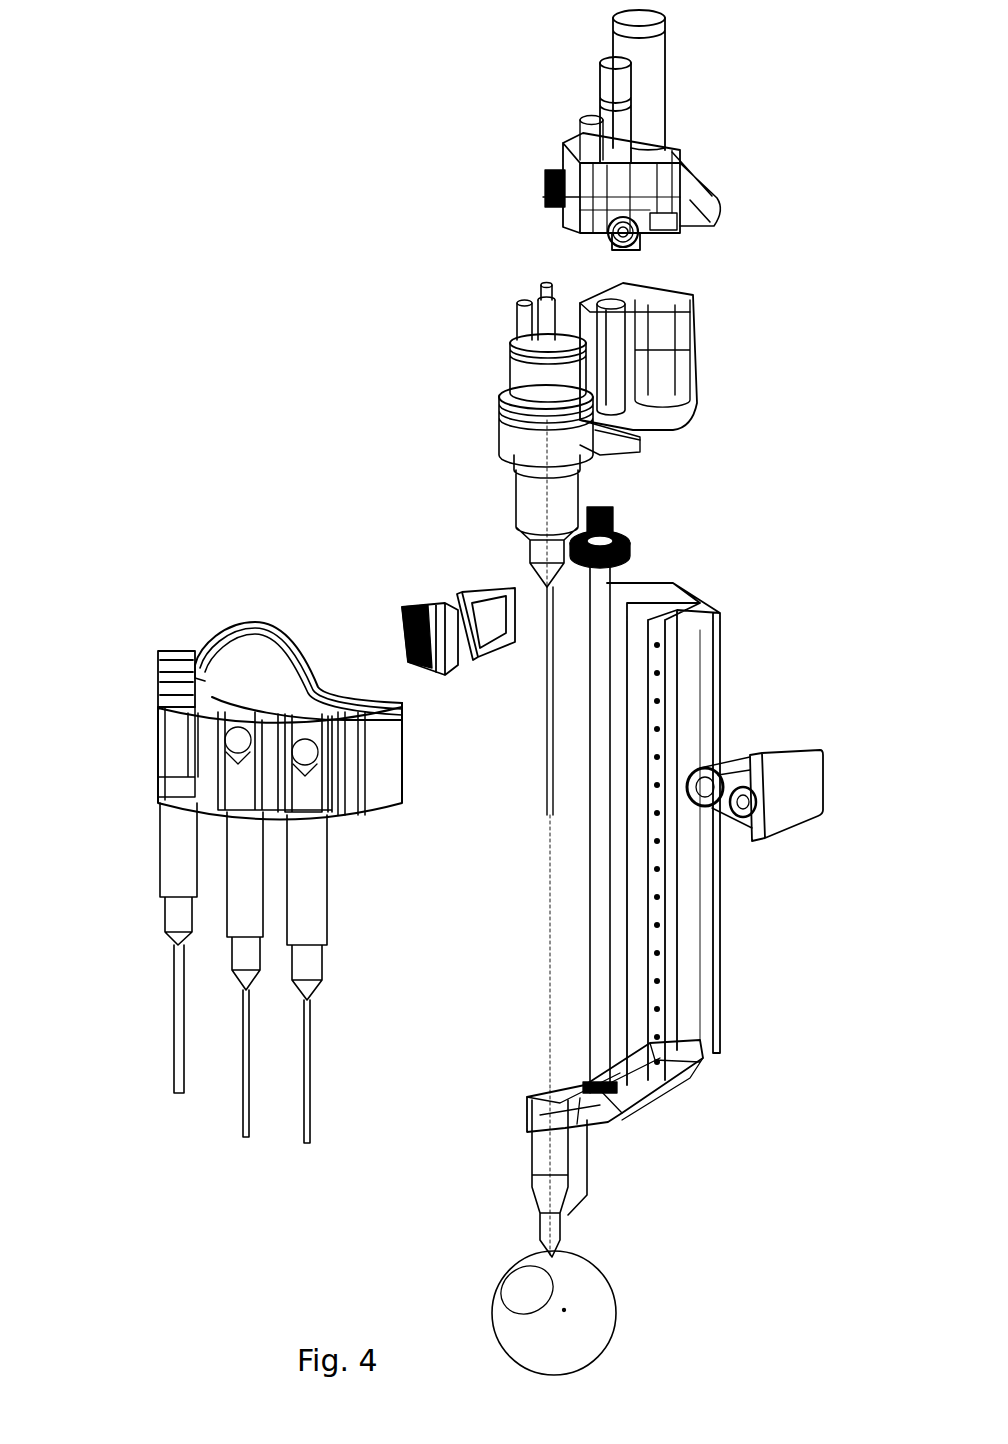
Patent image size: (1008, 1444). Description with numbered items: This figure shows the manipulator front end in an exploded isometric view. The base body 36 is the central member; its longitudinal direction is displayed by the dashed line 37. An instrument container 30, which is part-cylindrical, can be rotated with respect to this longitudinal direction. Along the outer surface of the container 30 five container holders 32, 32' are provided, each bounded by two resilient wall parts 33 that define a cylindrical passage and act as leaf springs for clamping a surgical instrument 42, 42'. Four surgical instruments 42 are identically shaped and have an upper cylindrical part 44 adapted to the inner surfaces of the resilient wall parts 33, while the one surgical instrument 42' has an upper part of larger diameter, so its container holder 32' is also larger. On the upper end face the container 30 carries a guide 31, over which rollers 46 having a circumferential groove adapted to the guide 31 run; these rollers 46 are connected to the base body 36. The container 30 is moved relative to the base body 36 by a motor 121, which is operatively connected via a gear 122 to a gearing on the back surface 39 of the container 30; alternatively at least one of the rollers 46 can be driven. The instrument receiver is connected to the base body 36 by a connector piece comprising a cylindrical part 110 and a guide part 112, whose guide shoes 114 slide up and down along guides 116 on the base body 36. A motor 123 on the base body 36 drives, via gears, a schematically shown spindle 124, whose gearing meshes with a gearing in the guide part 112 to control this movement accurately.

The instrument container 30 is at (383, 780).
The guide 31 is at (223, 620).
The container holder 32 is at (223, 649).
The container holder 32' is at (303, 656).
The resilient wall parts 33 is at (168, 758).
The base body 36 is at (700, 937).
The dashed line 37 is at (548, 910).
The back surface 39 is at (275, 620).
The surgical instrument 42 is at (237, 973).
The surgical instrument 42' is at (480, 343).
The upper cylindrical part 44 is at (343, 755).
The rollers 46 is at (565, 152).
The cylindrical part 110 is at (498, 428).
The guide part 112 is at (689, 453).
The guide shoes 114 is at (697, 330).
The guides 116 is at (717, 543).
The motor 121 is at (612, 118).
The gear 122 is at (615, 248).
The motor 123 is at (650, 77).
The spindle 124 is at (692, 1060).